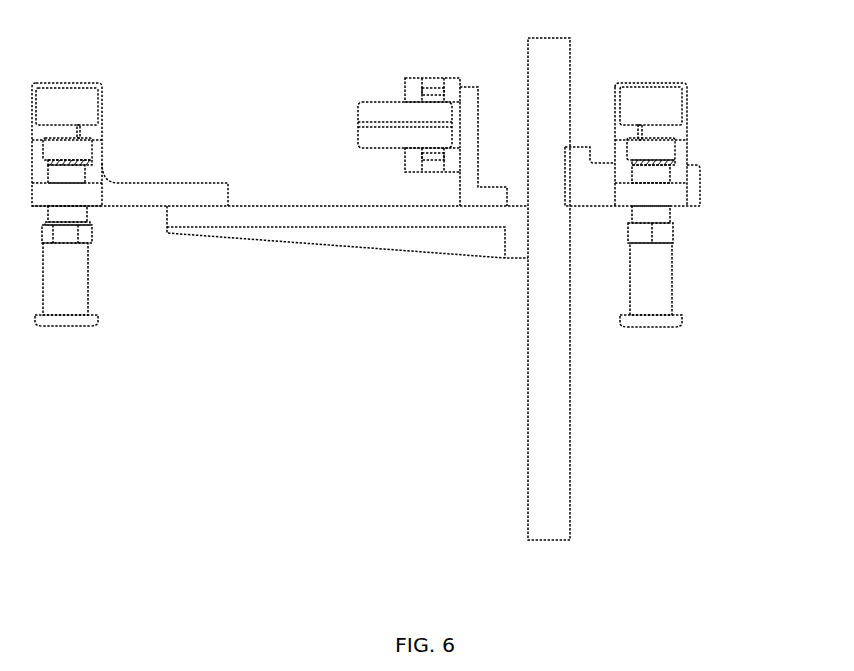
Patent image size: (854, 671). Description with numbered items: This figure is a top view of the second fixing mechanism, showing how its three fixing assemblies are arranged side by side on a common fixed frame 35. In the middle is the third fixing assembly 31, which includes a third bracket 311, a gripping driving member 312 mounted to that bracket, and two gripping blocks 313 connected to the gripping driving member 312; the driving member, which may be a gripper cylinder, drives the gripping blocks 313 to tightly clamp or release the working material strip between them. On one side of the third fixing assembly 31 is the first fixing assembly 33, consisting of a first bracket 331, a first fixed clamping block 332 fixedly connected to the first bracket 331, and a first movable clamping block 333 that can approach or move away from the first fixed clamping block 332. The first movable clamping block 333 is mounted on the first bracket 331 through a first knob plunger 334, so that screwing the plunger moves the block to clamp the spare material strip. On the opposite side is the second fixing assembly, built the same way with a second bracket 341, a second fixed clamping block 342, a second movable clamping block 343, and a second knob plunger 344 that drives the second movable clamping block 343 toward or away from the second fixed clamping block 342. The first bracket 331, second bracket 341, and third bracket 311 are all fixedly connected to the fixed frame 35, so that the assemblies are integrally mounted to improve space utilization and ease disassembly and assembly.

The third fixing assembly 31 is at (352, 114).
The third bracket 311 is at (470, 105).
The gripping driving member 312 is at (436, 78).
The gripping blocks 313 is at (375, 102).
The first fixing assembly 33 is at (106, 97).
The first bracket 331 is at (125, 190).
The first fixed clamping block 332 is at (68, 105).
The first movable clamping block 333 is at (75, 150).
The first knob plunger 334 is at (77, 274).
The second bracket 341 is at (678, 188).
The second fixed clamping block 342 is at (668, 107).
The second movable clamping block 343 is at (668, 150).
The second knob plunger 344 is at (665, 262).
The fixed frame 35 is at (550, 440).